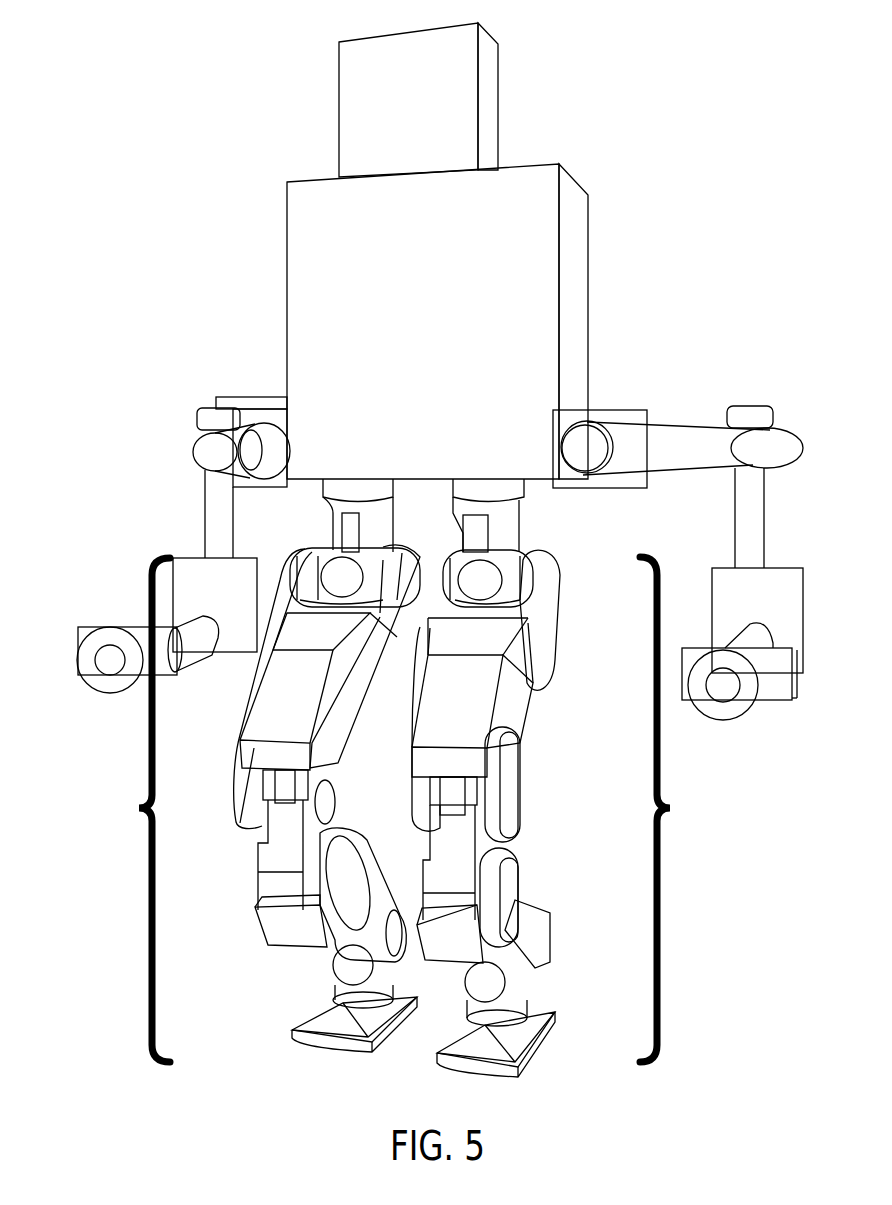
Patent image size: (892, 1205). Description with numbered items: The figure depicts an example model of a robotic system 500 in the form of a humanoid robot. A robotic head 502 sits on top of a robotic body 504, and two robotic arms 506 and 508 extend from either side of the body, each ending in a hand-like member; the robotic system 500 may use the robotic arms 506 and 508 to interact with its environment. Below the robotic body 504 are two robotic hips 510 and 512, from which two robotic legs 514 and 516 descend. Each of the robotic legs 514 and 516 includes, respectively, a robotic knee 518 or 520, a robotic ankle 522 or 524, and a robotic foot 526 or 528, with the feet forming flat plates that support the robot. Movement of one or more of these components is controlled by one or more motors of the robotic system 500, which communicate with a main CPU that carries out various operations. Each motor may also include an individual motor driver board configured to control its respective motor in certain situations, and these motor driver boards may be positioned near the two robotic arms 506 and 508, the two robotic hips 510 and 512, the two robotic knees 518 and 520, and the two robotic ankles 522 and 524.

The robotic system 500 is at (112, 55).
The robotic head 502 is at (293, 70).
The robotic body 504 is at (232, 272).
The robotic arm 506 is at (160, 490).
The robotic arm 508 is at (752, 362).
The robotic hip 510 is at (283, 533).
The robotic hip 512 is at (572, 550).
The robotic leg 514 is at (258, 785).
The robotic leg 516 is at (565, 788).
The robotic knee 518 is at (217, 782).
The robotic knee 520 is at (540, 780).
The robotic ankle 522 is at (270, 974).
The robotic ankle 524 is at (571, 964).
The robotic foot 526 is at (310, 1062).
The robotic foot 528 is at (555, 1068).